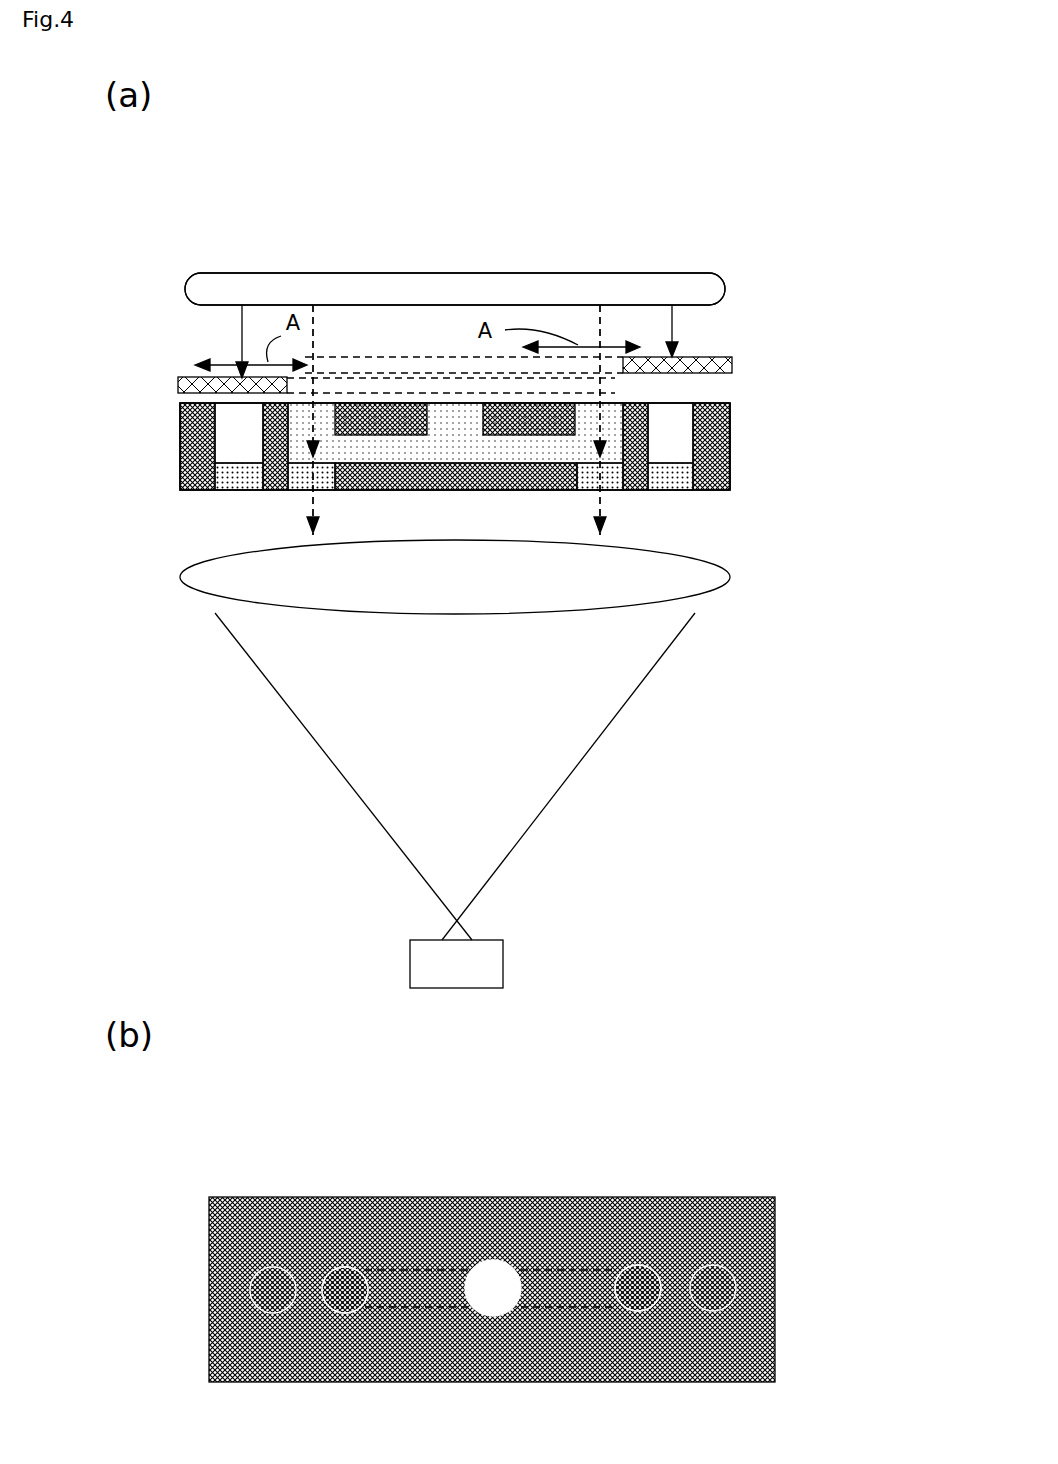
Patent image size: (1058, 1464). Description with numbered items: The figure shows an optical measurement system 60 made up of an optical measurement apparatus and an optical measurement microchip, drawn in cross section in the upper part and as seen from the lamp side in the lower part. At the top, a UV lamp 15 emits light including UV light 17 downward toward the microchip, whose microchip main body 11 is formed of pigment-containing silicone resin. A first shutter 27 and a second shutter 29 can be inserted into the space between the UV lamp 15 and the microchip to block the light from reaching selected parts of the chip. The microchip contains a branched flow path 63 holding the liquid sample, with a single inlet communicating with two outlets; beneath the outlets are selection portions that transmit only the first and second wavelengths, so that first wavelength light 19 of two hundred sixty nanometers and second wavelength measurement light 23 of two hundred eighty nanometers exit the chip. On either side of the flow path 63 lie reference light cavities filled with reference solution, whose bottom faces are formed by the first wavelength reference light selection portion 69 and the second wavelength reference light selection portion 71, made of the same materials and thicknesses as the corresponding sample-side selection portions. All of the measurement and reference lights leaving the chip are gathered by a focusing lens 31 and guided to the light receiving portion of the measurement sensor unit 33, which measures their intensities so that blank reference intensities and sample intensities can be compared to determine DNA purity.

The microchip main body 11 is at (180, 482).
The UV lamp 15 is at (270, 275).
The UV light 17 is at (240, 328).
The first wavelength light 19 is at (313, 503).
The second wavelength measurement light 23 is at (602, 498).
The first shutter 27 is at (197, 365).
The second shutter 29 is at (710, 357).
The focusing lens 31 is at (680, 580).
The measurement sensor unit 33 is at (480, 965).
The optical measurement system 60 is at (614, 162).
The flow path 63 is at (440, 445).
The first wavelength reference light selection portion 69 is at (225, 491).
The second wavelength reference light selection portion 71 is at (732, 477).